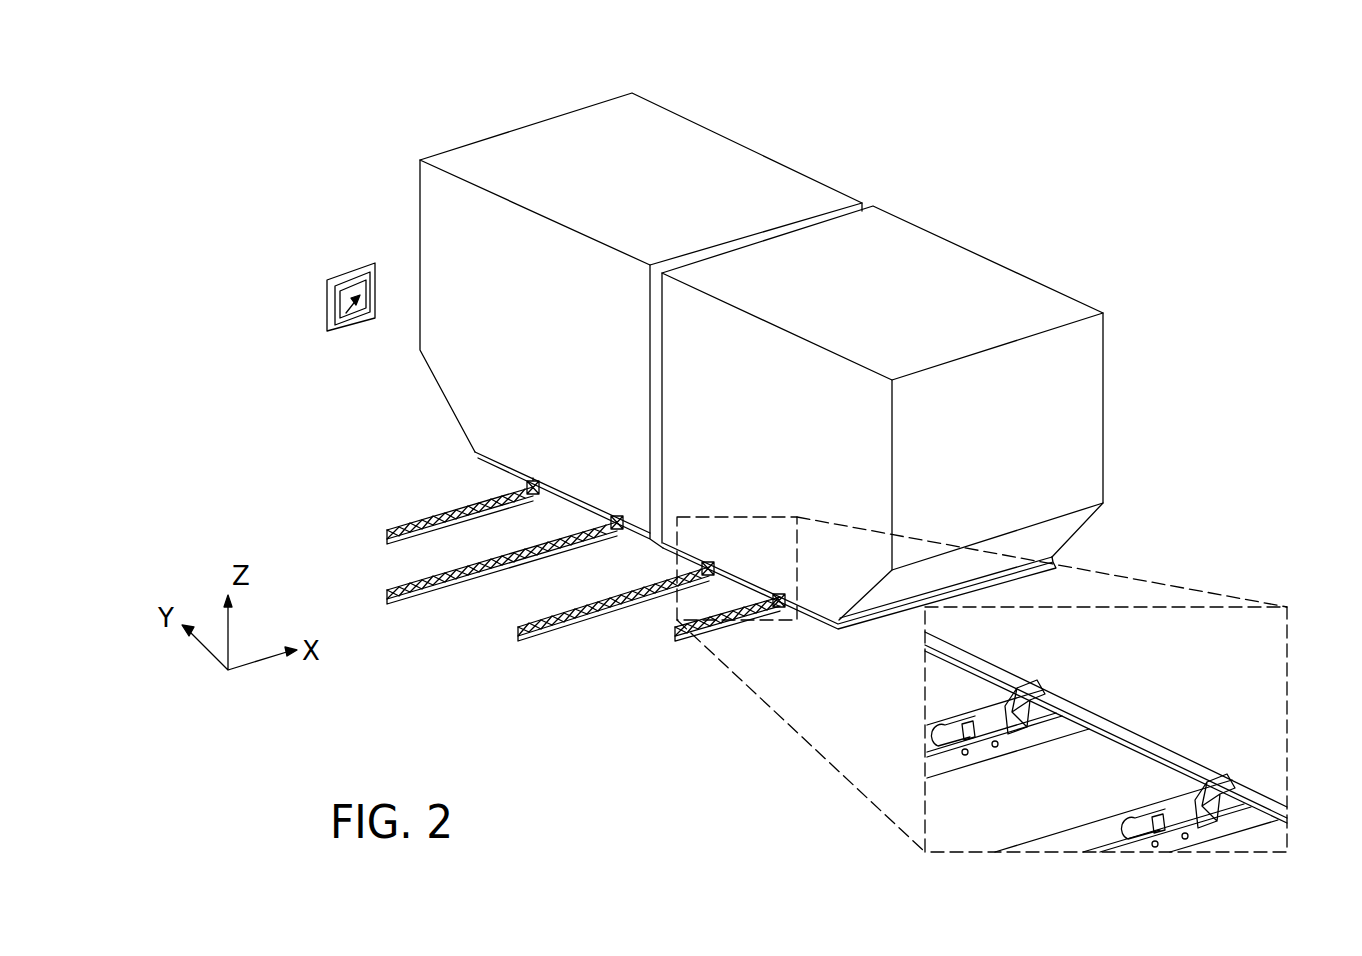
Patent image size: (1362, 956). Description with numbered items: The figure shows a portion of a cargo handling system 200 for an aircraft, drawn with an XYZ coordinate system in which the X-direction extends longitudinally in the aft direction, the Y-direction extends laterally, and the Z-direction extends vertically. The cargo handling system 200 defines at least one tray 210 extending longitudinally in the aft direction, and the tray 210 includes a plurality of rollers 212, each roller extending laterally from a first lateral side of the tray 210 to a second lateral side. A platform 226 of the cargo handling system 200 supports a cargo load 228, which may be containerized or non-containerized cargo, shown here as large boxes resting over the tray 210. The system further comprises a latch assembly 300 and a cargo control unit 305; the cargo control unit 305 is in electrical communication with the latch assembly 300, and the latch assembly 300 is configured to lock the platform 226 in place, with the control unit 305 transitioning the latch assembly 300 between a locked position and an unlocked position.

The cargo handling system 200 is at (1152, 136).
The tray 210 is at (443, 513).
The rollers 212 is at (512, 495).
The platform 226 is at (617, 521).
The cargo load 228 is at (608, 406).
The latch assembly 300 is at (531, 508).
The cargo control unit 305 is at (348, 330).